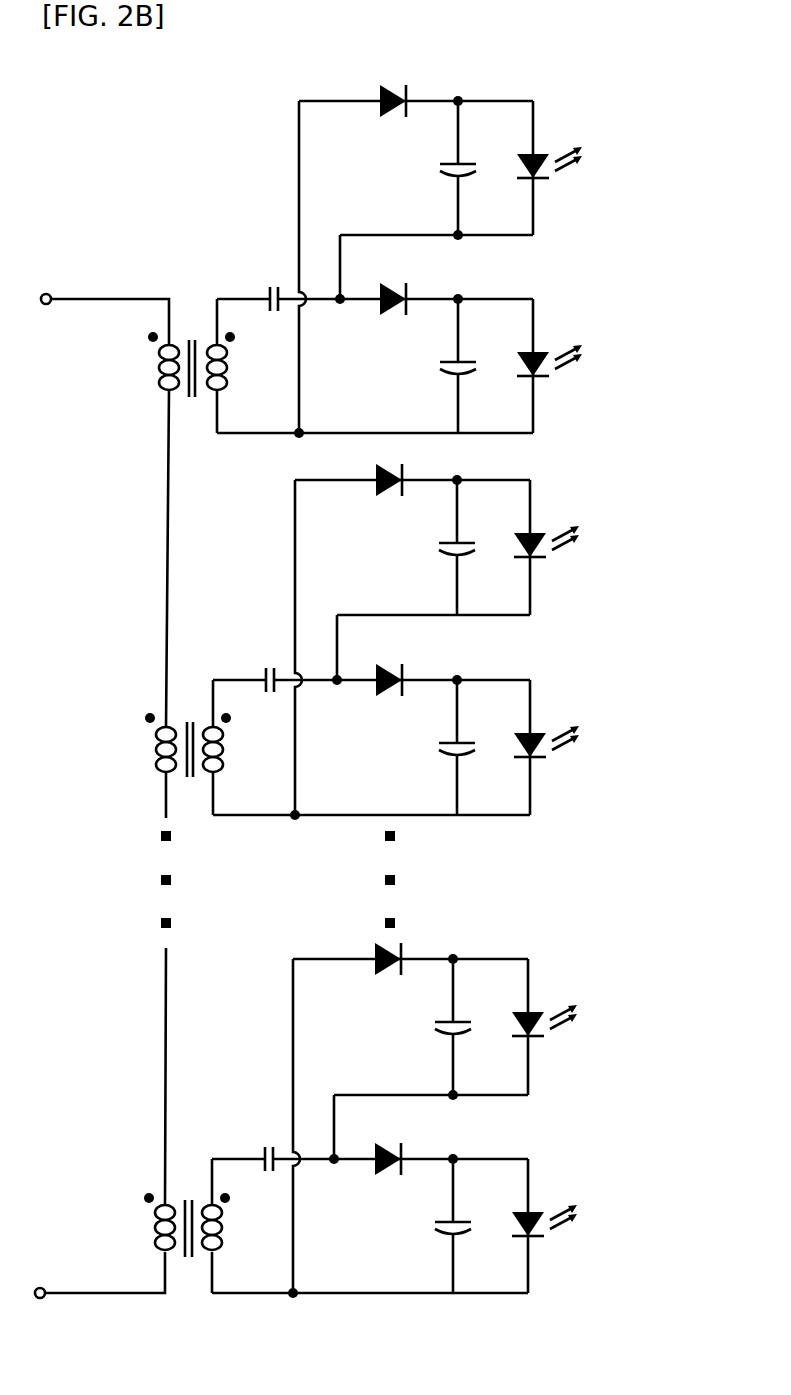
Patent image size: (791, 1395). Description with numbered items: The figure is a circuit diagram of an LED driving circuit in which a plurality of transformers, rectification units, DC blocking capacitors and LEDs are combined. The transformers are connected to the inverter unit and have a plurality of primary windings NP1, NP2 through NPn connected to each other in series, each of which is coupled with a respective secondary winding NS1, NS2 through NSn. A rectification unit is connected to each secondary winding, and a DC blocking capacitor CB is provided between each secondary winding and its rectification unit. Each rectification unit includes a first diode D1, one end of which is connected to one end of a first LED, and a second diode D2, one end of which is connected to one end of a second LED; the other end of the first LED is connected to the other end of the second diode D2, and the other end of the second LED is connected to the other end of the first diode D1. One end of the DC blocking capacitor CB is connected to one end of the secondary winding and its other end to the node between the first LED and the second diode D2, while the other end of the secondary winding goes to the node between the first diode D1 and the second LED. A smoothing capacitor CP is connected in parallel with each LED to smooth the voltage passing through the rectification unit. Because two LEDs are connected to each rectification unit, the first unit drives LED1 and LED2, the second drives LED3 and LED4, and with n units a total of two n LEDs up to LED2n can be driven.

The first diode D1 is at (389, 531).
The second diode D2 is at (389, 710).
The smoothing capacitor CP is at (434, 697).
The DC blocking capacitor CB is at (268, 709).
The primary winding NP1 is at (142, 361).
The secondary winding NS1 is at (243, 361).
The primary winding NP2 is at (139, 742).
The secondary winding NS2 is at (239, 742).
The primary winding NPn is at (138, 1221).
The secondary winding NSn is at (238, 1221).
The LED LED1 is at (570, 183).
The LED LED2 is at (569, 382).
The LED LED3 is at (567, 563).
The LED LED4 is at (566, 763).
The LED LED2n is at (572, 1243).